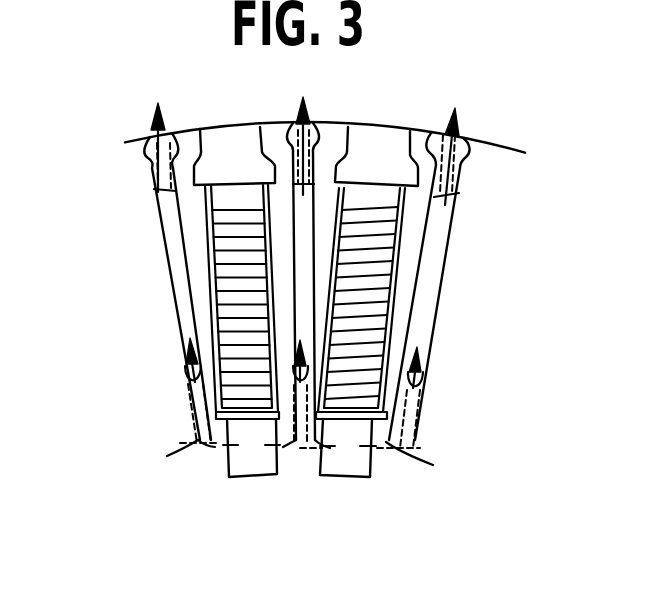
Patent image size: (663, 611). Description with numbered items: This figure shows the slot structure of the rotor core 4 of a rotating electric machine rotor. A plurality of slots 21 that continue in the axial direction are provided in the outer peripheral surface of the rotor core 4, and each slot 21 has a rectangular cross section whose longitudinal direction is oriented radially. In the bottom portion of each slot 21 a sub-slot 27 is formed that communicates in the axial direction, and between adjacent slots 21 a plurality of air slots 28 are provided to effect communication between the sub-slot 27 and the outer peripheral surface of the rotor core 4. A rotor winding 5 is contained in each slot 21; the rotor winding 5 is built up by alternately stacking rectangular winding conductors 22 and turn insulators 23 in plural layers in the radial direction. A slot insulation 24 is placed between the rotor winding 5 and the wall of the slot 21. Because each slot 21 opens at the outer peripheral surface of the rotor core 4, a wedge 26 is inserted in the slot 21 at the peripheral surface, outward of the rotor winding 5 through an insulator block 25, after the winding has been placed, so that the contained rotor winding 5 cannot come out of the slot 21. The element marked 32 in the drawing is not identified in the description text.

The rotor core 4 is at (517, 152).
The rotor winding 5 is at (190, 338).
The slot 21 is at (218, 398).
The winding conductor 22 is at (221, 286).
The turn insulator 23 is at (215, 247).
The slot insulation 24 is at (210, 372).
The insulator block 25 is at (377, 192).
The wedge 26 is at (360, 137).
The sub-slot 27 is at (240, 462).
The air slot 28 is at (167, 213).
The spacer 32 is at (398, 345).